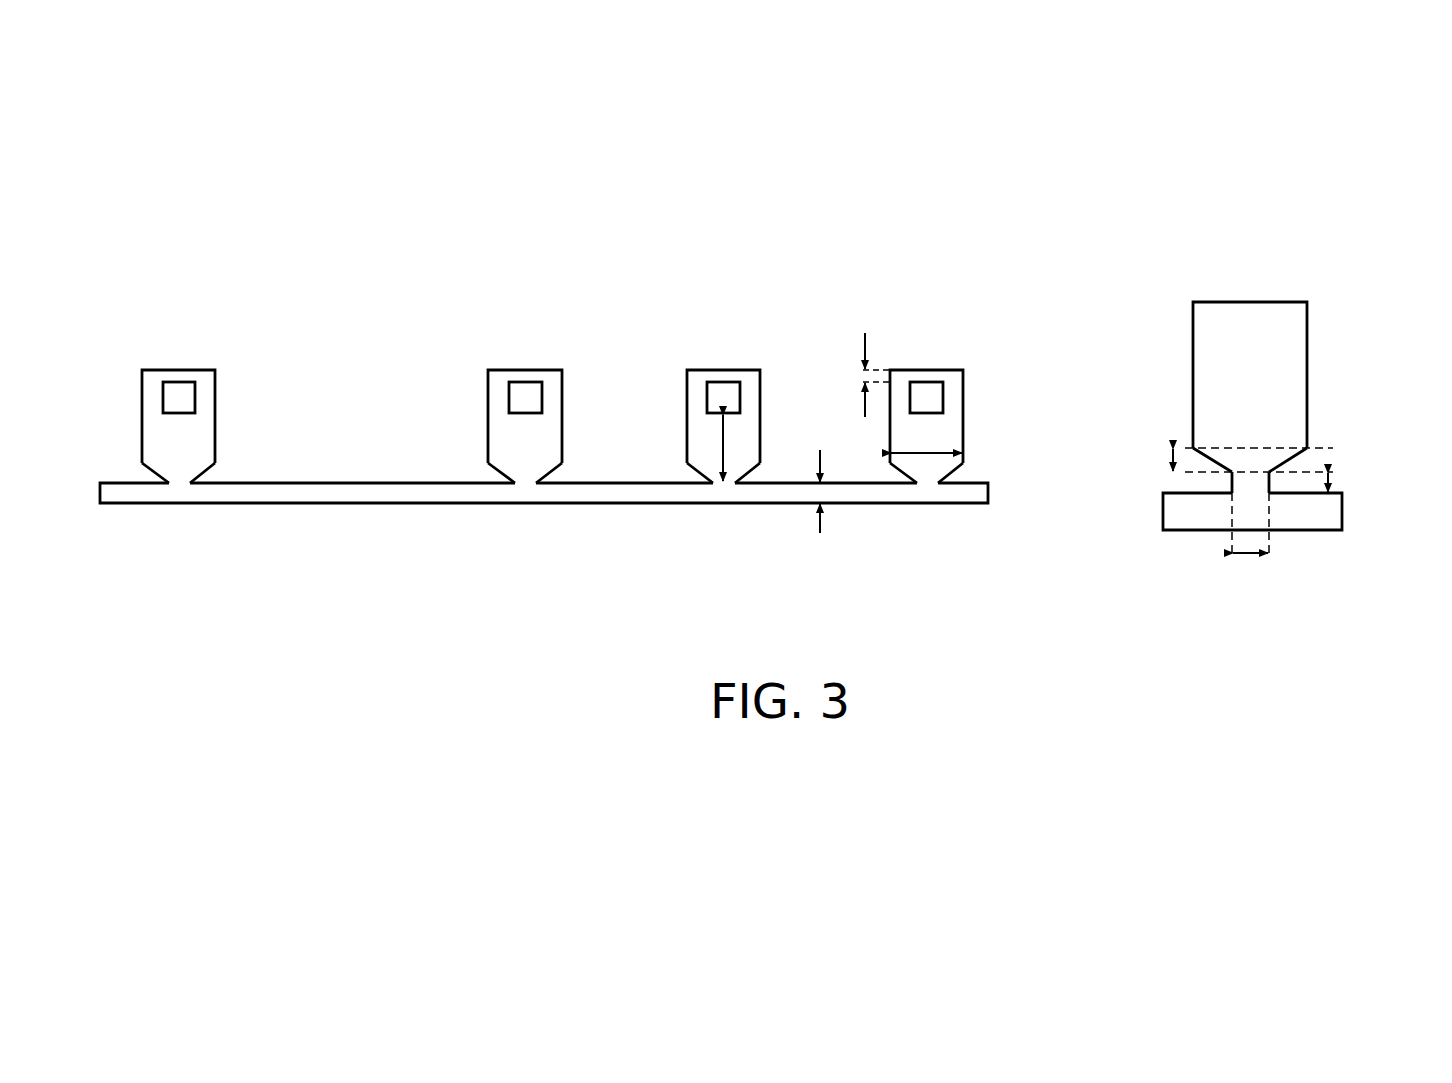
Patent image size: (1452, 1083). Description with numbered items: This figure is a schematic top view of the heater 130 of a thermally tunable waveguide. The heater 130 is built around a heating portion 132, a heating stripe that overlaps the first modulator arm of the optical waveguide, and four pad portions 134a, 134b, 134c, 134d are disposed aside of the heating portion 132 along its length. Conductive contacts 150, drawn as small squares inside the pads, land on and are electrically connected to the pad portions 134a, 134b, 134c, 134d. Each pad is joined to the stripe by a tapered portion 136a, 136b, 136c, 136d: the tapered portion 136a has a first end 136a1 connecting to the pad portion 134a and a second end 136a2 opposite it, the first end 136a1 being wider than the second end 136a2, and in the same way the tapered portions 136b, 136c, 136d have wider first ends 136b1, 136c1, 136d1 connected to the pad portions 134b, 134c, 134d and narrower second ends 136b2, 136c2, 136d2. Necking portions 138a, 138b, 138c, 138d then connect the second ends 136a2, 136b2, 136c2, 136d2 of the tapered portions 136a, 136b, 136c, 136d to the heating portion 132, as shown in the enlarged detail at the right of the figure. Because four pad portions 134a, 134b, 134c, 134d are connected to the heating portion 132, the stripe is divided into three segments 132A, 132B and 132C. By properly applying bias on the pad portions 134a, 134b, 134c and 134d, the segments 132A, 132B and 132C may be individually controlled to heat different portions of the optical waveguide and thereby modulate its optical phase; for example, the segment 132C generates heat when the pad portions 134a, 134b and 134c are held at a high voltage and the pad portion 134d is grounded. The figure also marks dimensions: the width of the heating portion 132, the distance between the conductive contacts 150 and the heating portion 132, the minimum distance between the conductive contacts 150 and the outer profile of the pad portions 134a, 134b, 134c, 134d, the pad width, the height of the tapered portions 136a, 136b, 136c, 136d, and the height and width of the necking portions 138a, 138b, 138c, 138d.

The heater 130 is at (140, 630).
The heating portion 132 is at (1330, 513).
The segment 132A is at (329, 493).
The segment 132B is at (613, 493).
The segment 132C is at (785, 493).
The pad portion 134a is at (182, 379).
The pad portion 134b is at (550, 378).
The pad portion 134c is at (750, 378).
The pad portion 134d is at (952, 378).
The tapered portion 136a is at (200, 470).
The tapered portion 136b is at (548, 470).
The tapered portion 136c is at (745, 471).
The tapered portion 136d is at (947, 472).
The first end 136a1 is at (1228, 441).
The first end 136b1 is at (1228, 441).
The first end 136c1 is at (1228, 441).
The first end 136d1 is at (1322, 395).
The second end 136a2 is at (1144, 547).
The second end 136b2 is at (1144, 547).
The second end 136c2 is at (1144, 547).
The second end 136d2 is at (1245, 475).
The necking portion 138a is at (1345, 571).
The necking portion 138b is at (1345, 571).
The necking portion 138c is at (1345, 571).
The necking portion 138d is at (1257, 487).
The conductive contact 150 is at (170, 387).